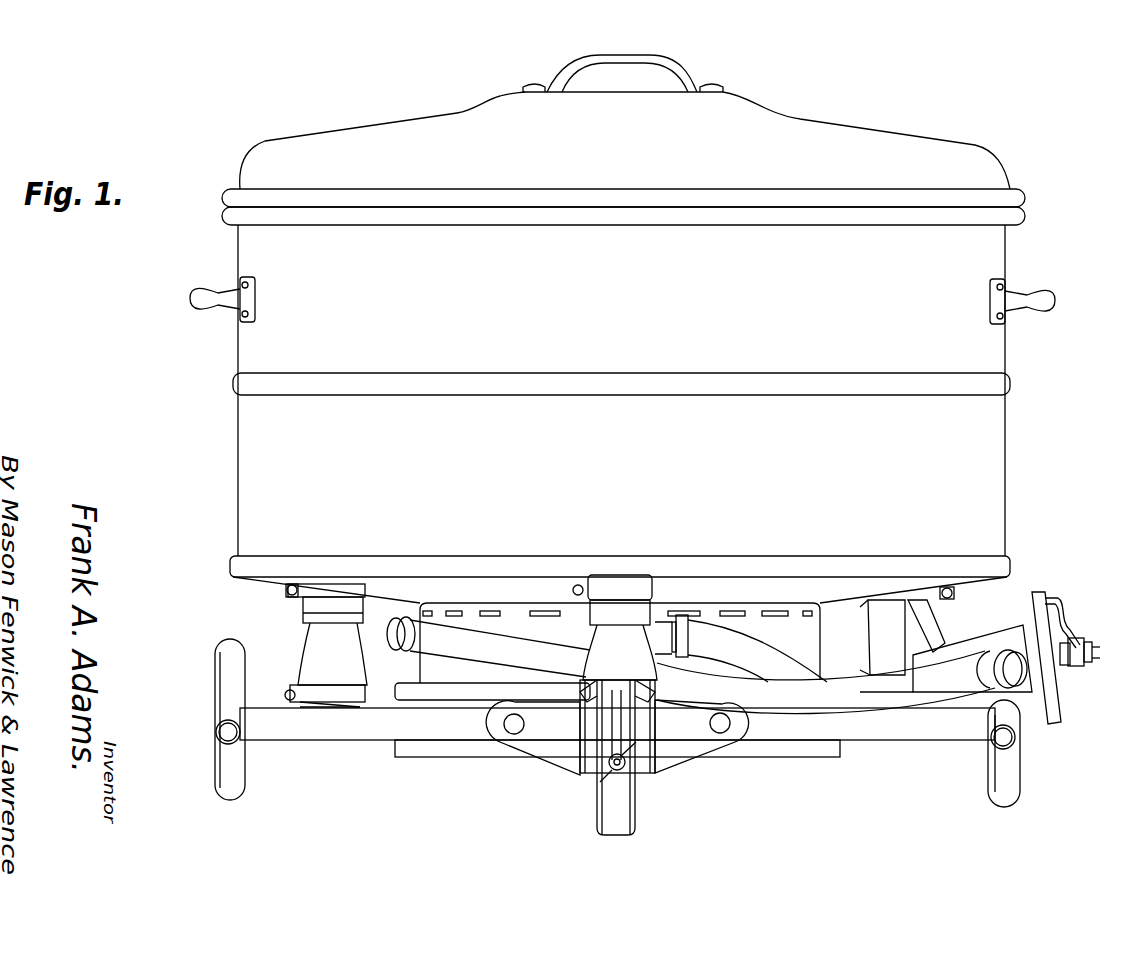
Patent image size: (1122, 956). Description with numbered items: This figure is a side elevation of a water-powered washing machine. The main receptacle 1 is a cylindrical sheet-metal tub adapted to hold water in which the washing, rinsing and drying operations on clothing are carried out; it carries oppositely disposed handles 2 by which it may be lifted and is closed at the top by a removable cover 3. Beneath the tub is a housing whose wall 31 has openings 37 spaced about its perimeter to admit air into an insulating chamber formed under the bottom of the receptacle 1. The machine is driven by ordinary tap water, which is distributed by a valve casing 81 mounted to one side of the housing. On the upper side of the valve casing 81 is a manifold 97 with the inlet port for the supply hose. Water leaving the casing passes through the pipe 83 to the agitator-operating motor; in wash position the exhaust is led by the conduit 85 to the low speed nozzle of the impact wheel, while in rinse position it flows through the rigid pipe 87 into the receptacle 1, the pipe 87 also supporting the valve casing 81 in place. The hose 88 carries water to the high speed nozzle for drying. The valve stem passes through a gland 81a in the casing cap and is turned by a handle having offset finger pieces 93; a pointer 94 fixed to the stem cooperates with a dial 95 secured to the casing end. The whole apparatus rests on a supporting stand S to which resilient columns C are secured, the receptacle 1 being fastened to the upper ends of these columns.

The main receptacle 1 is at (982, 492).
The handles 2 is at (213, 297).
The removable cover 3 is at (623, 140).
The wall of housing 31 is at (815, 648).
The openings 37 is at (736, 612).
The valve casing 81 is at (960, 657).
The gland 81a is at (1068, 672).
The pipe 83 is at (488, 647).
The conduit 85 is at (741, 648).
The pipe 87 is at (930, 625).
The hose 88 is at (826, 682).
The finger pieces 93 is at (1087, 652).
The pointer 94 is at (1050, 616).
The dial 95 is at (1058, 712).
The manifold 97 is at (1006, 628).
The resilient columns C is at (315, 648).
The supporting stand S is at (337, 728).